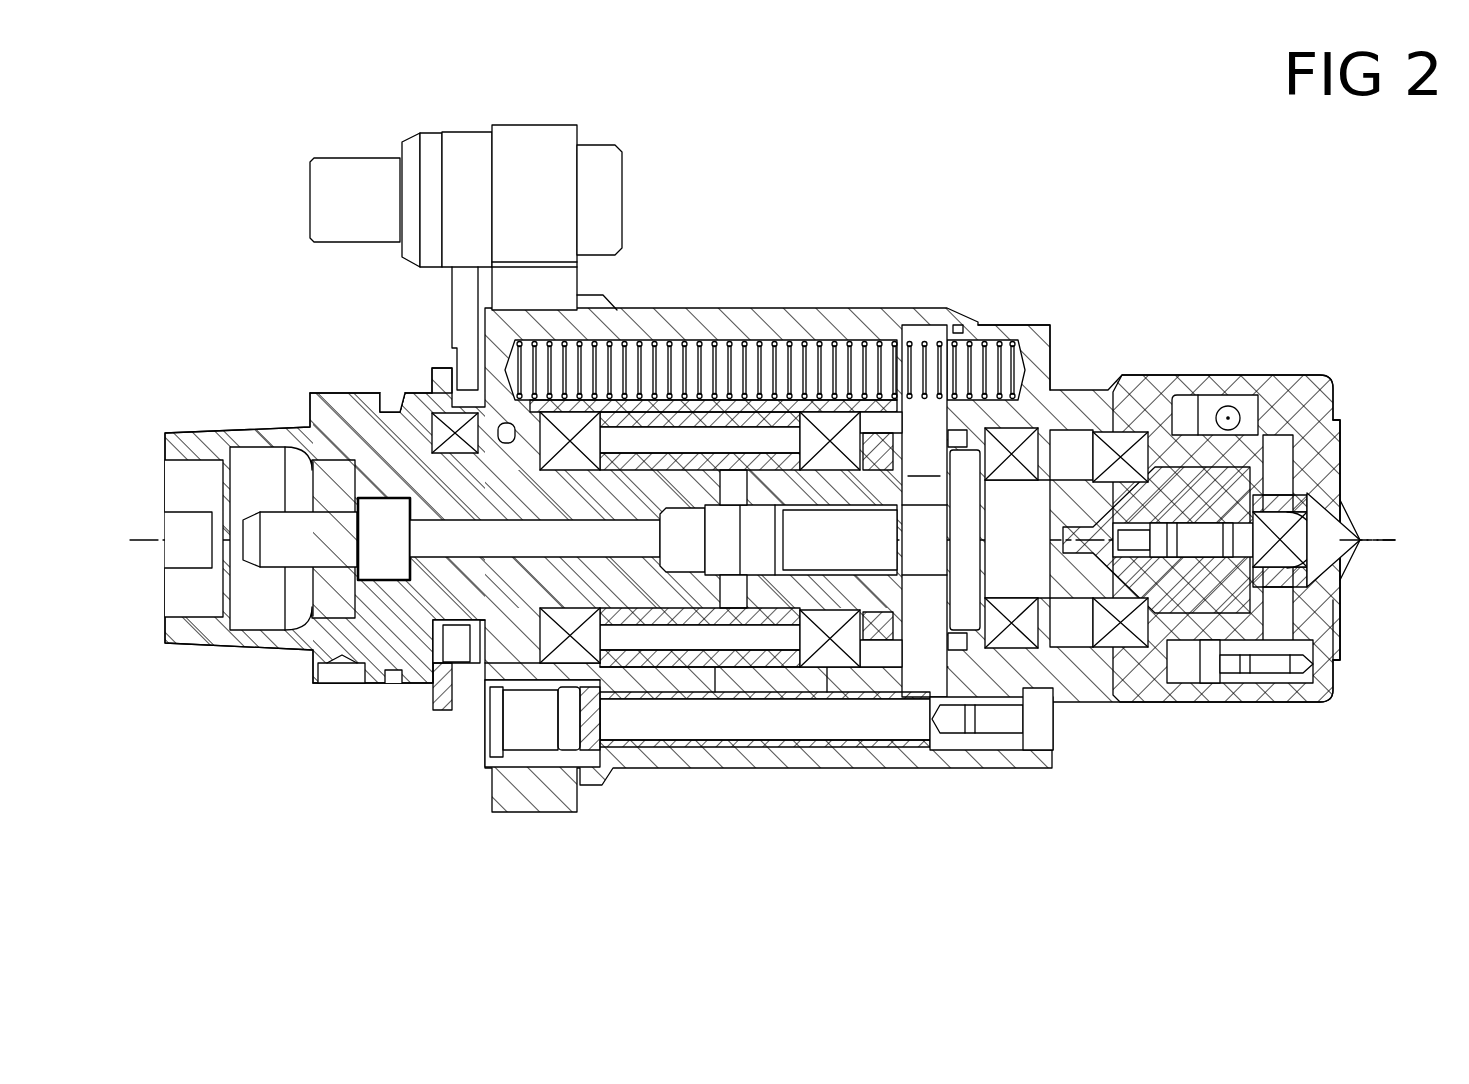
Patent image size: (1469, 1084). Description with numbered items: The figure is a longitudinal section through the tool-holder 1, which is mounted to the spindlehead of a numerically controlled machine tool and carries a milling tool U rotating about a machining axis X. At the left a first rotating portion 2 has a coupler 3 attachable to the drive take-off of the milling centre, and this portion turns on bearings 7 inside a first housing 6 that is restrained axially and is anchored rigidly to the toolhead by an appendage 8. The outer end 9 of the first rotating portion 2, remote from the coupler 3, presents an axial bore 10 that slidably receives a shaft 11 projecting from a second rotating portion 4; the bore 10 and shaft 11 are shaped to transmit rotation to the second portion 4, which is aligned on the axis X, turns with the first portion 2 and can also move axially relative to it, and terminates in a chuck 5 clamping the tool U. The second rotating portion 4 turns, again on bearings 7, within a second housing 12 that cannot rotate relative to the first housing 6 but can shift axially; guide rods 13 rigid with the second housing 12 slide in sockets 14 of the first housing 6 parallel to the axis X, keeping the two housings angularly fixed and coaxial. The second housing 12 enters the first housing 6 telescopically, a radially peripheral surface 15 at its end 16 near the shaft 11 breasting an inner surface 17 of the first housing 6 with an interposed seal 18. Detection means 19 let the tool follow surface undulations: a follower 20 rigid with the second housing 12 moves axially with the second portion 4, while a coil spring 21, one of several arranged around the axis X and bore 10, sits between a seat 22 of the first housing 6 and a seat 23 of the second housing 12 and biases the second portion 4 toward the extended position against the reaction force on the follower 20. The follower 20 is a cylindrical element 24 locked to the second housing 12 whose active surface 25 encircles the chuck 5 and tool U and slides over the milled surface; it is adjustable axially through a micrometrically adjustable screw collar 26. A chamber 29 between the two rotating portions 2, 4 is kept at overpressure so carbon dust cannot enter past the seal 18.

The tool-holder 1 is at (1082, 218).
The first rotating portion 2 is at (400, 682).
The coupler 3 is at (162, 598).
The second rotating portion 4 is at (1168, 600).
The chuck 5 is at (1222, 510).
The first housing 6 is at (775, 773).
The bearings 7 is at (548, 437).
The appendage 8 is at (597, 143).
The outer end 9 is at (905, 395).
The axial bore 10 is at (725, 562).
The shaft 11 is at (1012, 760).
The second housing 12 is at (1062, 393).
The guide rods 13 is at (668, 720).
The sockets 14 is at (805, 740).
The radially peripheral surface 15 is at (993, 325).
The end 16 is at (985, 635).
The inner surface 17 is at (843, 557).
The seal means 18 is at (960, 325).
The detection means 19 is at (1350, 377).
The follower 20 is at (1345, 420).
The resilient element 21 is at (762, 355).
The seat 22 is at (520, 352).
The seat 23 is at (983, 347).
The cylindrical element 24 is at (1217, 660).
The active surface 25 is at (1340, 625).
The screw collar 26 is at (1120, 640).
The chamber 29 is at (924, 463).
The milling tool U is at (1350, 527).
The machining axis X is at (1352, 558).